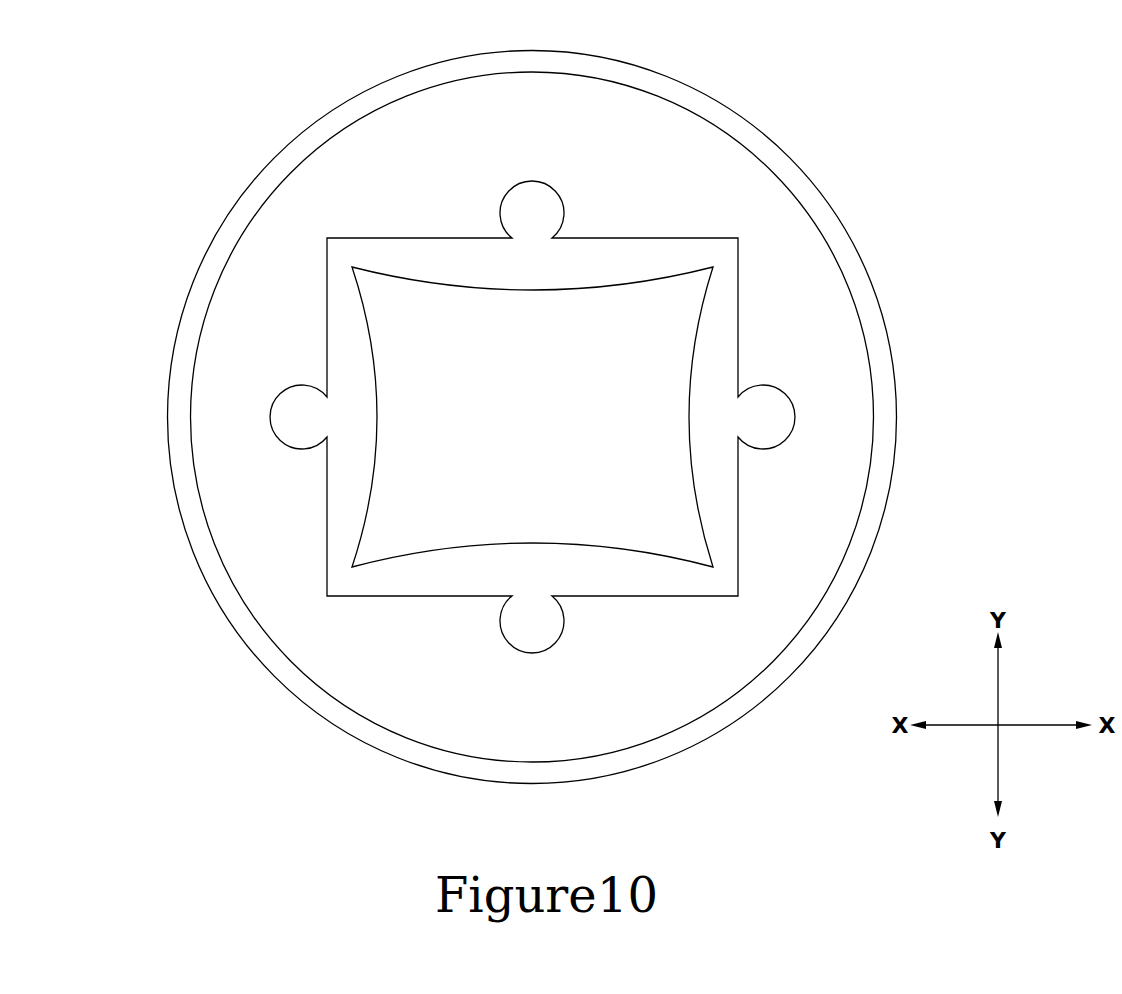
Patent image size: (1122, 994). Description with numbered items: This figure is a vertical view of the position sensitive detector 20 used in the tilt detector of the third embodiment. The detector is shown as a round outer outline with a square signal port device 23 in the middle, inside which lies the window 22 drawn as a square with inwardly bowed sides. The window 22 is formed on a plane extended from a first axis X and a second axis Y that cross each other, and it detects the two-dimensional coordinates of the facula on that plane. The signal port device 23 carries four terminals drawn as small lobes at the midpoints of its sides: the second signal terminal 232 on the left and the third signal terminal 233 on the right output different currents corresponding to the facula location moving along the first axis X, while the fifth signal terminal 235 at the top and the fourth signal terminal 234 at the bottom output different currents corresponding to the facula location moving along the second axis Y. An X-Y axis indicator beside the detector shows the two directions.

The position sensitive detector 20 is at (230, 211).
The window 22 is at (427, 357).
The signal port device 23 is at (257, 371).
The second signal terminal 232 is at (283, 422).
The third signal terminal 233 is at (780, 418).
The fourth signal terminal 234 is at (545, 633).
The fifth signal terminal 235 is at (540, 195).